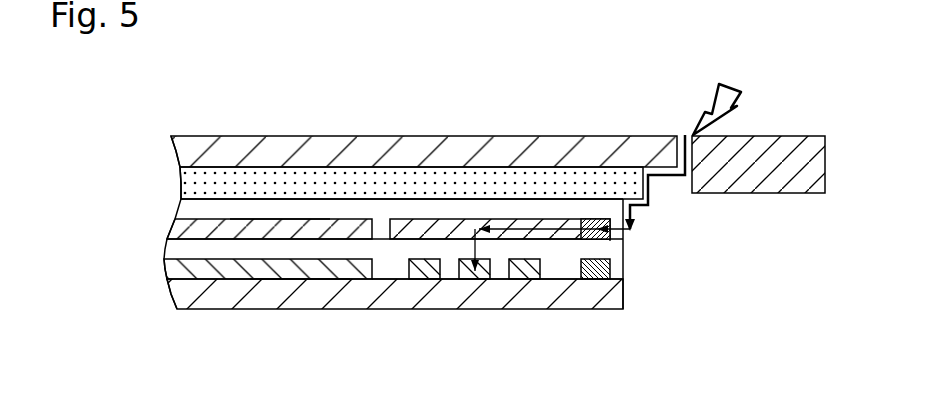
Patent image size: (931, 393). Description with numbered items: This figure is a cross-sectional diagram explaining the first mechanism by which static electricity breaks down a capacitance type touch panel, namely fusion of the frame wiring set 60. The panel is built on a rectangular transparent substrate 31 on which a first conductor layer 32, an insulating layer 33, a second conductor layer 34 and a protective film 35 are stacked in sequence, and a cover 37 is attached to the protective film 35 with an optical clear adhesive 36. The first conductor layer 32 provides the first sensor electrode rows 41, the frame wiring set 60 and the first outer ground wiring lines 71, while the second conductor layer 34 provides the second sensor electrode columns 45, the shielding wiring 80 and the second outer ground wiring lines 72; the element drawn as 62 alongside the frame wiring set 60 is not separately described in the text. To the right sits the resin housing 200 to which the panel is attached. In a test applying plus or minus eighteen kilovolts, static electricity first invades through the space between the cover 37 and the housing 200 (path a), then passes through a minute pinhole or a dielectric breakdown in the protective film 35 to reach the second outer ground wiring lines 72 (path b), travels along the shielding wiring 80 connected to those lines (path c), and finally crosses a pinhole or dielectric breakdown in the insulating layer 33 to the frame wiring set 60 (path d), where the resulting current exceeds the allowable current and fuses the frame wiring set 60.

The transparent substrate 31 is at (203, 309).
The first conductor layer 32 is at (165, 272).
The insulating layer 33 is at (163, 250).
The second conductor layer 34 is at (170, 230).
The protective film 35 is at (180, 210).
The optical clear adhesive 36 is at (182, 183).
The cover 37 is at (203, 136).
The first sensor electrode rows 41 is at (297, 280).
The second sensor electrode columns 45 is at (276, 219).
The frame wiring set 60 is at (474, 320).
The photodiode 62 is at (424, 269).
The first outer ground wiring lines 71 is at (597, 268).
The second outer ground wiring lines 72 is at (597, 219).
The shielding wiring 80 is at (437, 219).
The housing 200 is at (792, 136).
The step a is at (652, 196).
The step b is at (617, 241).
The step c is at (552, 239).
The step d is at (476, 248).